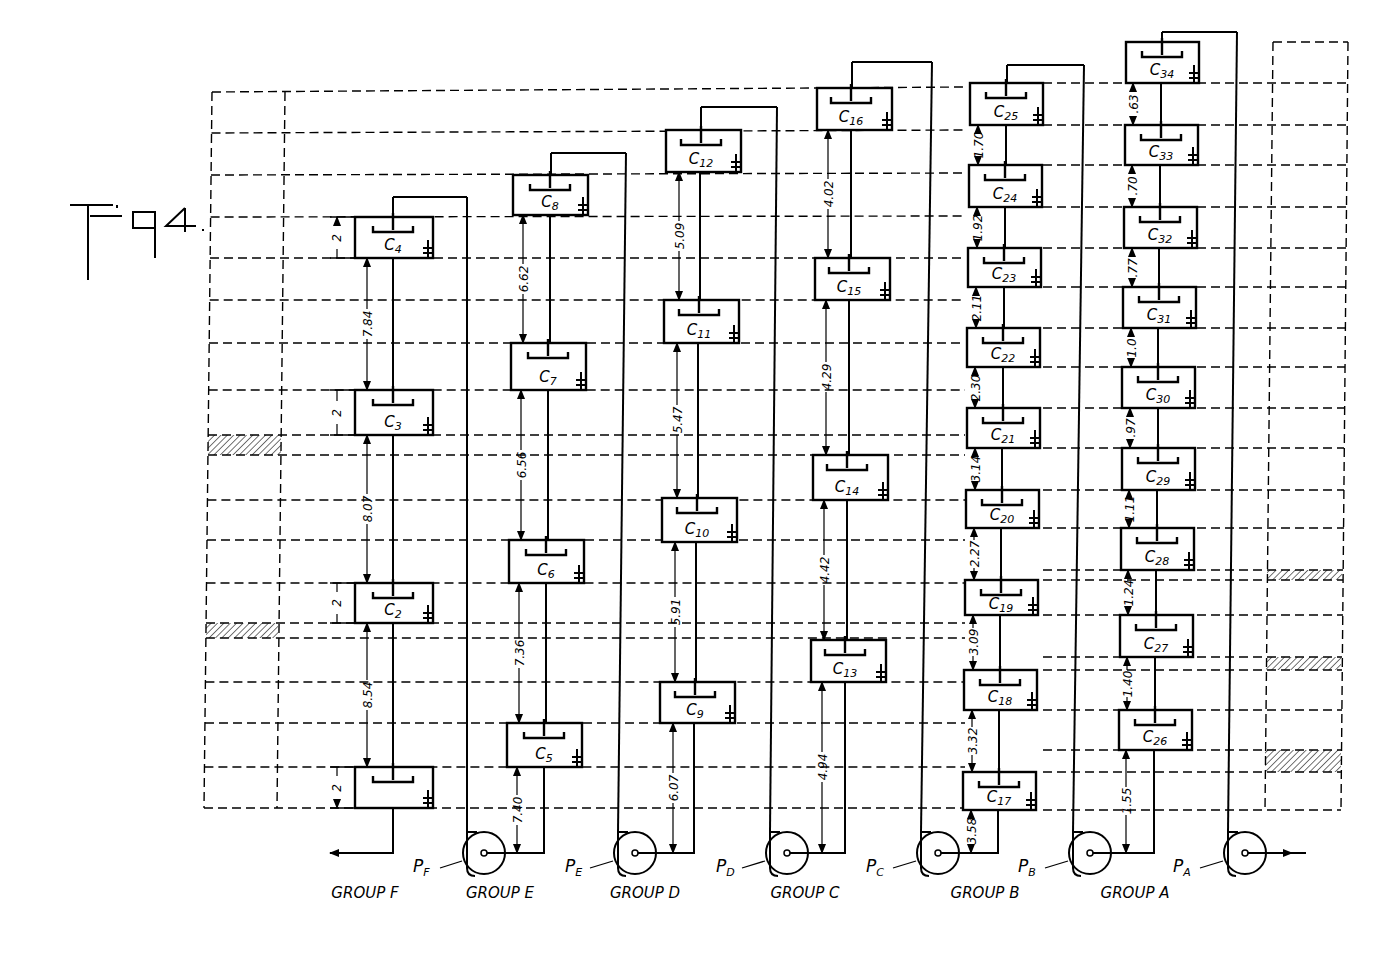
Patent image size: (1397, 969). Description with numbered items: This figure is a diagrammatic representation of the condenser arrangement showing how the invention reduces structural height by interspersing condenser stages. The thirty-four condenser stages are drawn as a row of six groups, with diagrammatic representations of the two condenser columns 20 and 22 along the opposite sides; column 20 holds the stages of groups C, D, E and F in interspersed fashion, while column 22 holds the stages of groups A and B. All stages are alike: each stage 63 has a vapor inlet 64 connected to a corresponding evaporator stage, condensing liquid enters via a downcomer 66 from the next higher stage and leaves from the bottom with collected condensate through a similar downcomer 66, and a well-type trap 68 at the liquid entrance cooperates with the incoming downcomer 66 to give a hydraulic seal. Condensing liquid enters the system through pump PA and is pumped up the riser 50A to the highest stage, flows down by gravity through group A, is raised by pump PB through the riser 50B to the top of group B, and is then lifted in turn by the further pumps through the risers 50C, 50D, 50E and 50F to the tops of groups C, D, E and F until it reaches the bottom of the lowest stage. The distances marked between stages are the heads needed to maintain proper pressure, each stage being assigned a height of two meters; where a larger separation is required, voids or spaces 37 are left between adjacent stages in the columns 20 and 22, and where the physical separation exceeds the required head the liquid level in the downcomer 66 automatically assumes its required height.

The condenser column 20 is at (187, 107).
The condenser column 22 is at (1360, 71).
The voids or spaces 37 is at (208, 447).
The riser 50A is at (1232, 507).
The riser 50B is at (1078, 550).
The riser 50C is at (927, 598).
The riser 50D is at (773, 595).
The riser 50E is at (622, 598).
The riser 50F is at (467, 693).
The tank 63 is at (388, 802).
The vapor inlet 64 is at (441, 791).
The downcomer 66 is at (395, 752).
The well-type trap 68 is at (365, 780).